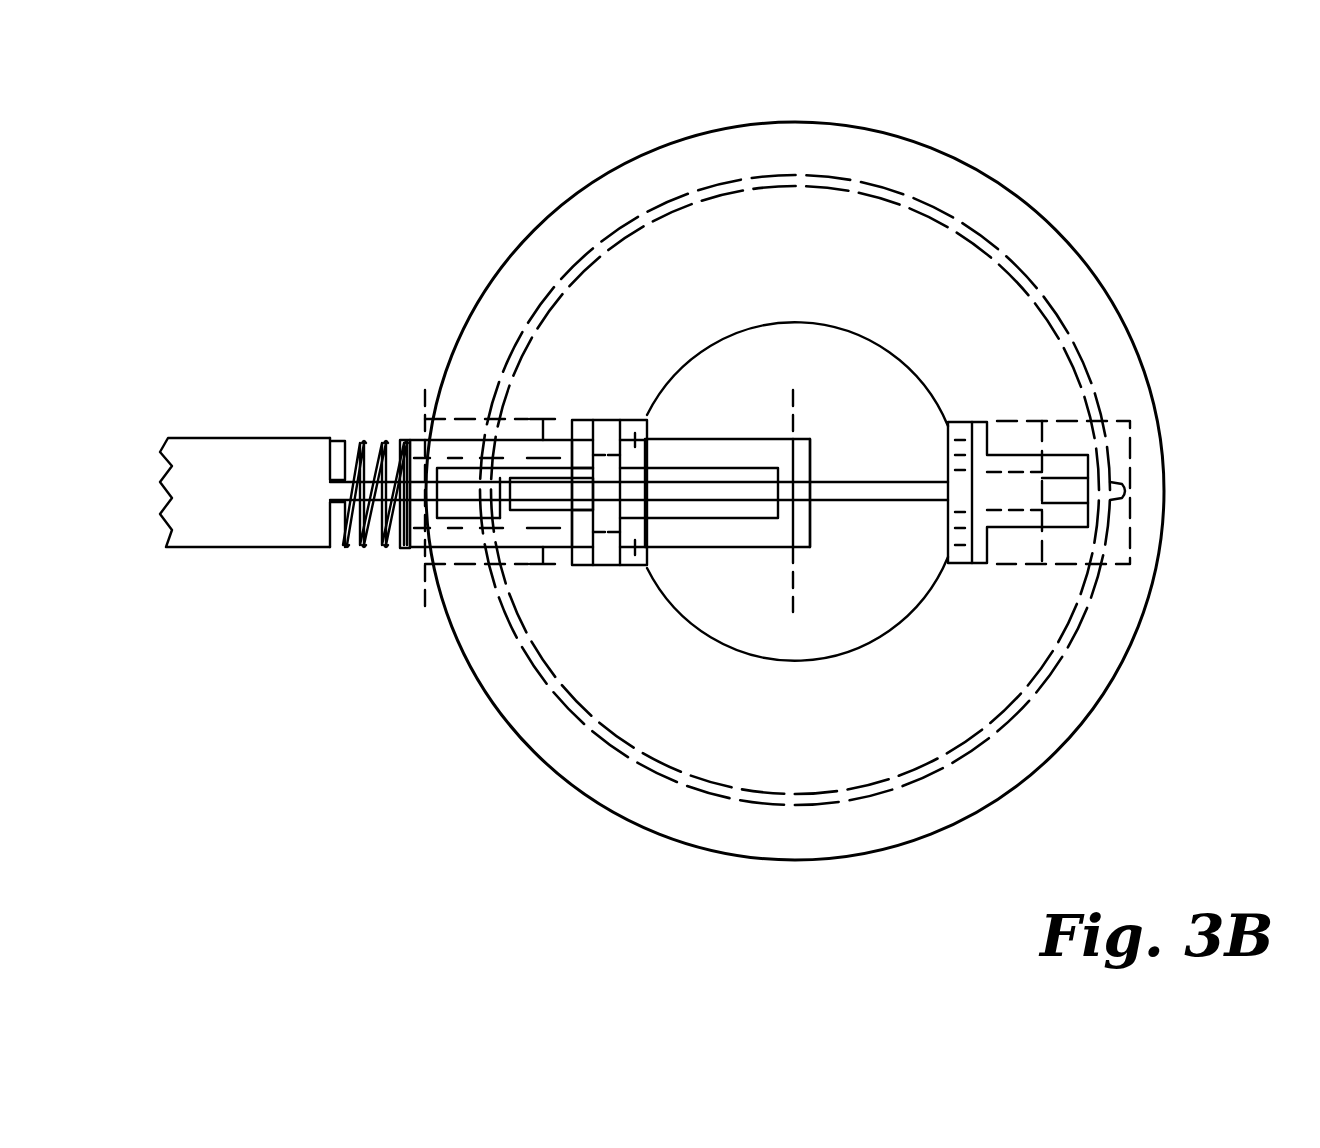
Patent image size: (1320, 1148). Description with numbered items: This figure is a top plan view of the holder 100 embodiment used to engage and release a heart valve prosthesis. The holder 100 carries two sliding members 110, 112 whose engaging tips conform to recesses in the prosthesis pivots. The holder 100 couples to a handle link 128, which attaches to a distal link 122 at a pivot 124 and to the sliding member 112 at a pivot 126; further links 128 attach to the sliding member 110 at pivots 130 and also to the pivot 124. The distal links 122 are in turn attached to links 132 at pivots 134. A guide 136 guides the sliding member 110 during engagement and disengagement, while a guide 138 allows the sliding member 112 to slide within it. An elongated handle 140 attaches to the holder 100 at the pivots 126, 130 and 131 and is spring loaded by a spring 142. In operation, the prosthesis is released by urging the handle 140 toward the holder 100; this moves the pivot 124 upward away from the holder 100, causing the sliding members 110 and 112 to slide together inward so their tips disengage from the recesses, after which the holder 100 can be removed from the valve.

The holder 100 is at (1108, 290).
The sliding member 110 is at (608, 418).
The sliding member 112 is at (1007, 440).
The distal link 122 is at (877, 490).
The pivot 124 is at (812, 507).
The pivot 126 is at (946, 436).
The handle link 128 is at (707, 448).
The pivot 130 is at (632, 422).
The pivot 131 is at (587, 433).
The link 132 is at (533, 420).
The pivot 134 is at (395, 455).
The guide 136 is at (500, 445).
The guide 138 is at (1127, 580).
The elongated handle 140 is at (207, 452).
The spring 142 is at (346, 550).